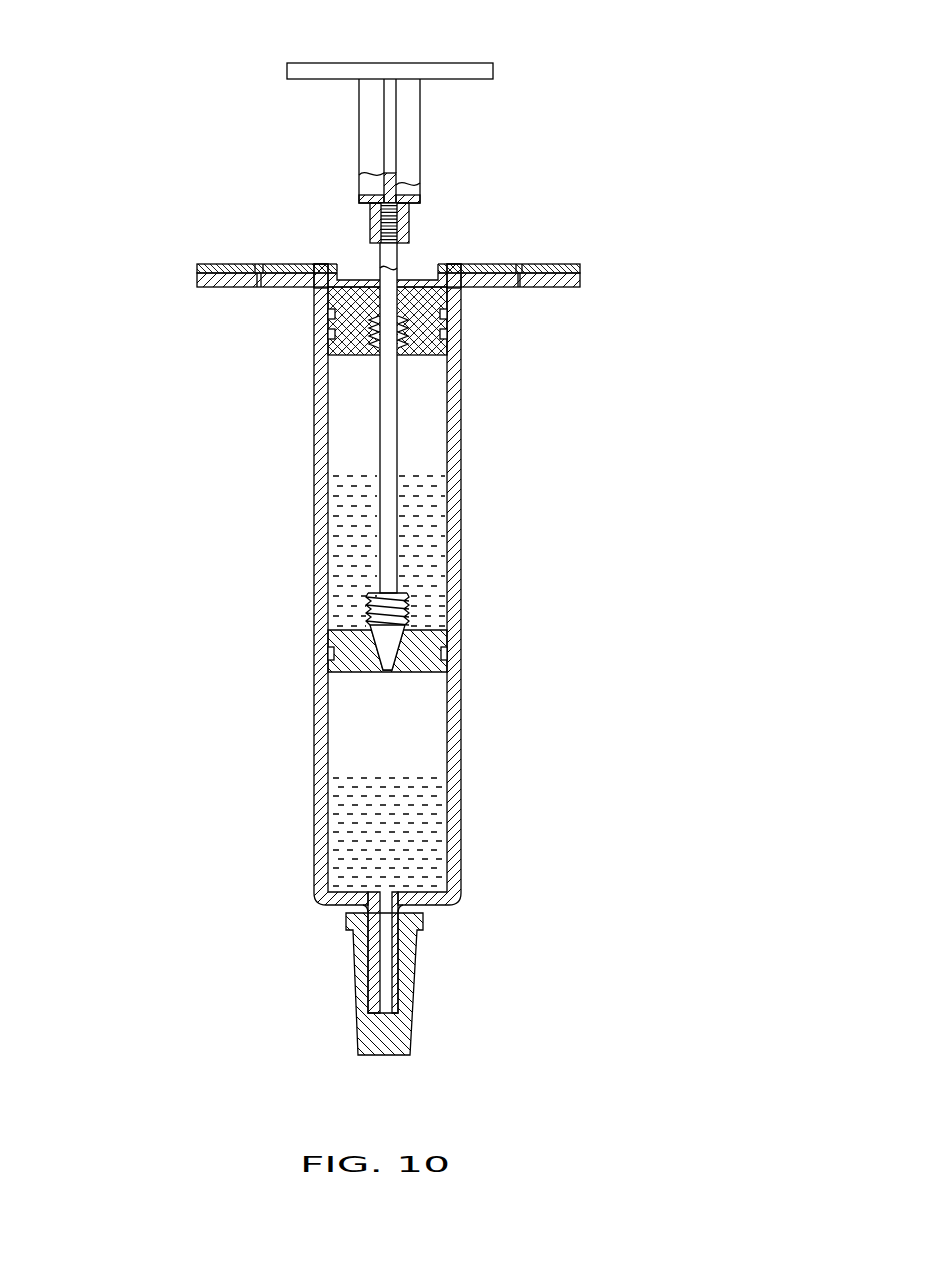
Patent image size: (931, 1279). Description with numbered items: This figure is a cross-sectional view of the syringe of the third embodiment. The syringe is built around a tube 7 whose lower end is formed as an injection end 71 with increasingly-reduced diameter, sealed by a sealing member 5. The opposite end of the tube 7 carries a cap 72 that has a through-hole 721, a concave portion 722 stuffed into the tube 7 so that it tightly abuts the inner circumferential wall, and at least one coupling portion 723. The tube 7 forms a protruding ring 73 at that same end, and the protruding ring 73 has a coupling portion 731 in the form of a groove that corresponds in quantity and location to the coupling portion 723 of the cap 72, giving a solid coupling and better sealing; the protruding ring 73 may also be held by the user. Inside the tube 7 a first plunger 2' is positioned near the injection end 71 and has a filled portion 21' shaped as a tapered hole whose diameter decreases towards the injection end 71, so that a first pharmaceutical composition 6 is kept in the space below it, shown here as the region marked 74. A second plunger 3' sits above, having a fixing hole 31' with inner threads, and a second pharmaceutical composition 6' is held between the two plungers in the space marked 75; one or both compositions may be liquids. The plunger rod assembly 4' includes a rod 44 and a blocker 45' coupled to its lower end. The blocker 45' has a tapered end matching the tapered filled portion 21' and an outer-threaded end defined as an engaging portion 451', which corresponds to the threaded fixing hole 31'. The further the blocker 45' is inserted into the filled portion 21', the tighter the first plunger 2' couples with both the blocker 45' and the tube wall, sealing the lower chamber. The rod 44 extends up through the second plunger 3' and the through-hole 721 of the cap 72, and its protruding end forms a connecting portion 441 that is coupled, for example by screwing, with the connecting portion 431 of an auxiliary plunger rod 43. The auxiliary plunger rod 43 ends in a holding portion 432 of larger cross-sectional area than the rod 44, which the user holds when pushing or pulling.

The holding portion 432 is at (468, 68).
The auxiliary plunger rod 43 is at (412, 152).
The connecting portion 431 is at (368, 212).
The connecting portion 441 is at (344, 157).
The rod 44 is at (387, 437).
The blocker 45' is at (565, 558).
The engaging portion 451' is at (317, 593).
The plunger rod assembly 4' is at (790, 372).
The through-hole 721 is at (370, 278).
The concave portion 722 is at (415, 278).
The coupling portion 723 is at (257, 277).
The coupling portion 731 is at (341, 245).
The cap 72 is at (197, 264).
The protruding ring 73 is at (220, 285).
The second plunger 3' is at (353, 339).
The fixing hole 31' is at (454, 338).
The upper chamber 75 is at (343, 413).
The second pharmaceutical composition 6' is at (340, 526).
The first plunger 2' is at (425, 668).
The filled portion 21' is at (495, 640).
The lower chamber 74 is at (347, 740).
The tube 7 is at (455, 740).
The first pharmaceutical composition 6 is at (337, 832).
The injection end 71 is at (400, 953).
The sealing member 5 is at (363, 1028).